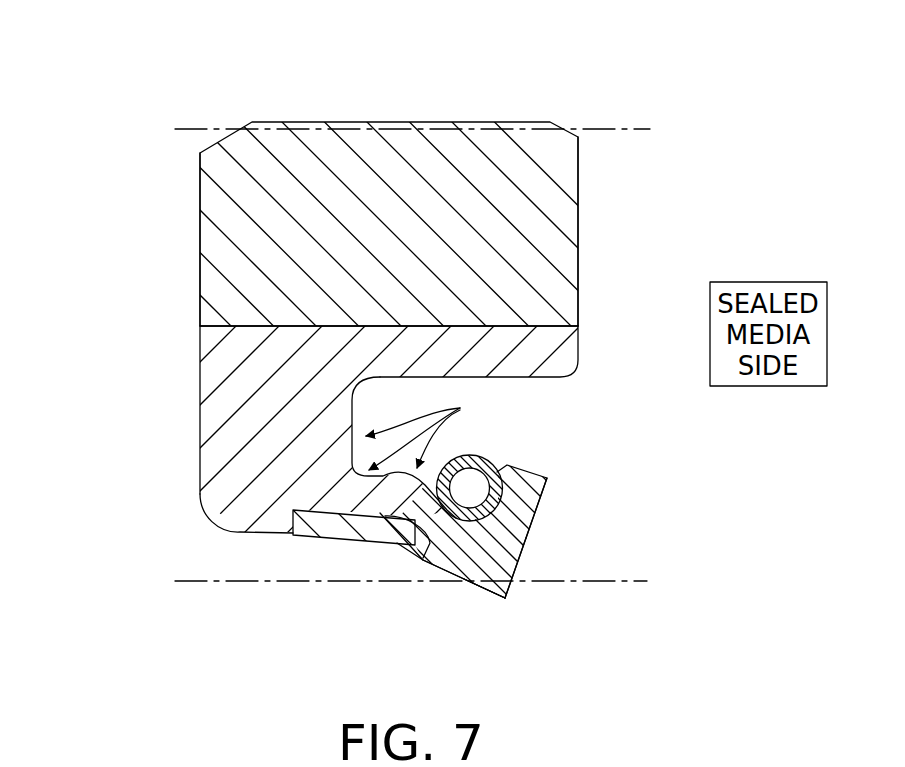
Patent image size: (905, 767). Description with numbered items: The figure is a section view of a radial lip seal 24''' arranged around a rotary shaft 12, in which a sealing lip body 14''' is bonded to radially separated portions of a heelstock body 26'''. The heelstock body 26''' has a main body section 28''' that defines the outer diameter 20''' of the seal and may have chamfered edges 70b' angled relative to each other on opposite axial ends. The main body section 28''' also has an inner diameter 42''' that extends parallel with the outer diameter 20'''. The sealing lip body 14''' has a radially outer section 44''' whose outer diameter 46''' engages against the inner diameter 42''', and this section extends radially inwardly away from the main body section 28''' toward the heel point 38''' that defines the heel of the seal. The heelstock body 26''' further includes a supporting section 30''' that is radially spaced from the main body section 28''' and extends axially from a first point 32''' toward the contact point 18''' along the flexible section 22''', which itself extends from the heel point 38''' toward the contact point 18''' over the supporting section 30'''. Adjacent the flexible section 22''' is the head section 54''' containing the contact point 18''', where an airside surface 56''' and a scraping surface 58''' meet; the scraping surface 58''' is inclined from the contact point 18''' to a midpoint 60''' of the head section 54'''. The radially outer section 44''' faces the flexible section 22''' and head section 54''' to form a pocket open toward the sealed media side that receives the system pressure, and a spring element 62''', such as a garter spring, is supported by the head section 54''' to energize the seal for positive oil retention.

The radial lip seal 24''' is at (398, 358).
The outer diameter 20''' is at (363, 180).
The chamfered edges 70b' is at (437, 152).
The main body section 28''' is at (334, 300).
The inner diameter 42''' is at (593, 231).
The sealing lip body 14''' is at (398, 399).
The heelstock body 26''' is at (202, 399).
The heel point 38''' is at (195, 516).
The radially outer section 44''' is at (334, 361).
The outer diameter 46''' is at (487, 432).
The first point 32''' is at (315, 540).
The flexible section 22''' is at (442, 579).
The supporting section 30''' is at (392, 586).
The contact point 18''' is at (510, 600).
The head section 54''' is at (503, 583).
The midpoint 60''' is at (625, 520).
The scraping surface 58''' is at (624, 568).
The airside surface 56''' is at (499, 642).
The spring element 62''' is at (492, 478).
The rotary shaft 12 is at (637, 584).